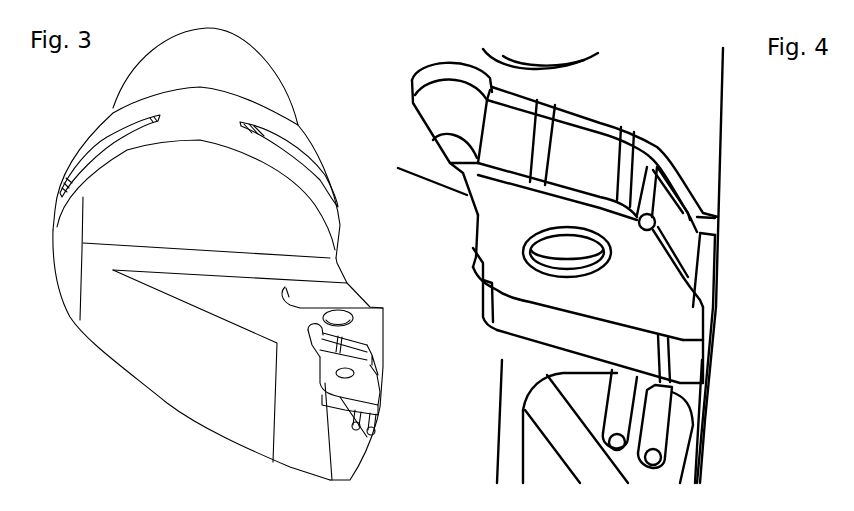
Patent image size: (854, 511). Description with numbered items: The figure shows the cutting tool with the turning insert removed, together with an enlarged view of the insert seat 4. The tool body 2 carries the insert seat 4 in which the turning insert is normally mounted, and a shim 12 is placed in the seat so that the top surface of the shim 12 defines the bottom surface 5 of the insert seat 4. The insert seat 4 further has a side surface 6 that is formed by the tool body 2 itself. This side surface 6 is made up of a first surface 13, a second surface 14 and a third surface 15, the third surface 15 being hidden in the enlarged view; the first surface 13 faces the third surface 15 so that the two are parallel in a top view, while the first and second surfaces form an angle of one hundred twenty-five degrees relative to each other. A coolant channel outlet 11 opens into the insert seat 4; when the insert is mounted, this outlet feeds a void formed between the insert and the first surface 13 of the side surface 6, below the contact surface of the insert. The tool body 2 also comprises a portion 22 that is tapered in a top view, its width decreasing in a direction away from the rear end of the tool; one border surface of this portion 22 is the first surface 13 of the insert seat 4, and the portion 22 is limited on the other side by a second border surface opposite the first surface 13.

In FIG. 3, the tool body 2 is at (175, 350).
In FIG. 3, the insert seat 4 is at (397, 355).
In FIG. 4, the bottom surface 5 is at (588, 283).
In FIG. 3, the side surface 6 is at (352, 347).
In FIG. 4, the coolant channel outlet 11 is at (656, 220).
In FIG. 3, the shim 12 is at (338, 390).
In FIG. 4, the shim 12 is at (678, 352).
In FIG. 4, the first surface 13 is at (673, 230).
In FIG. 4, the second surface 14 is at (522, 142).
In FIG. 4, the third surface 15 is at (480, 222).
In FIG. 4, the portion 22 is at (697, 165).